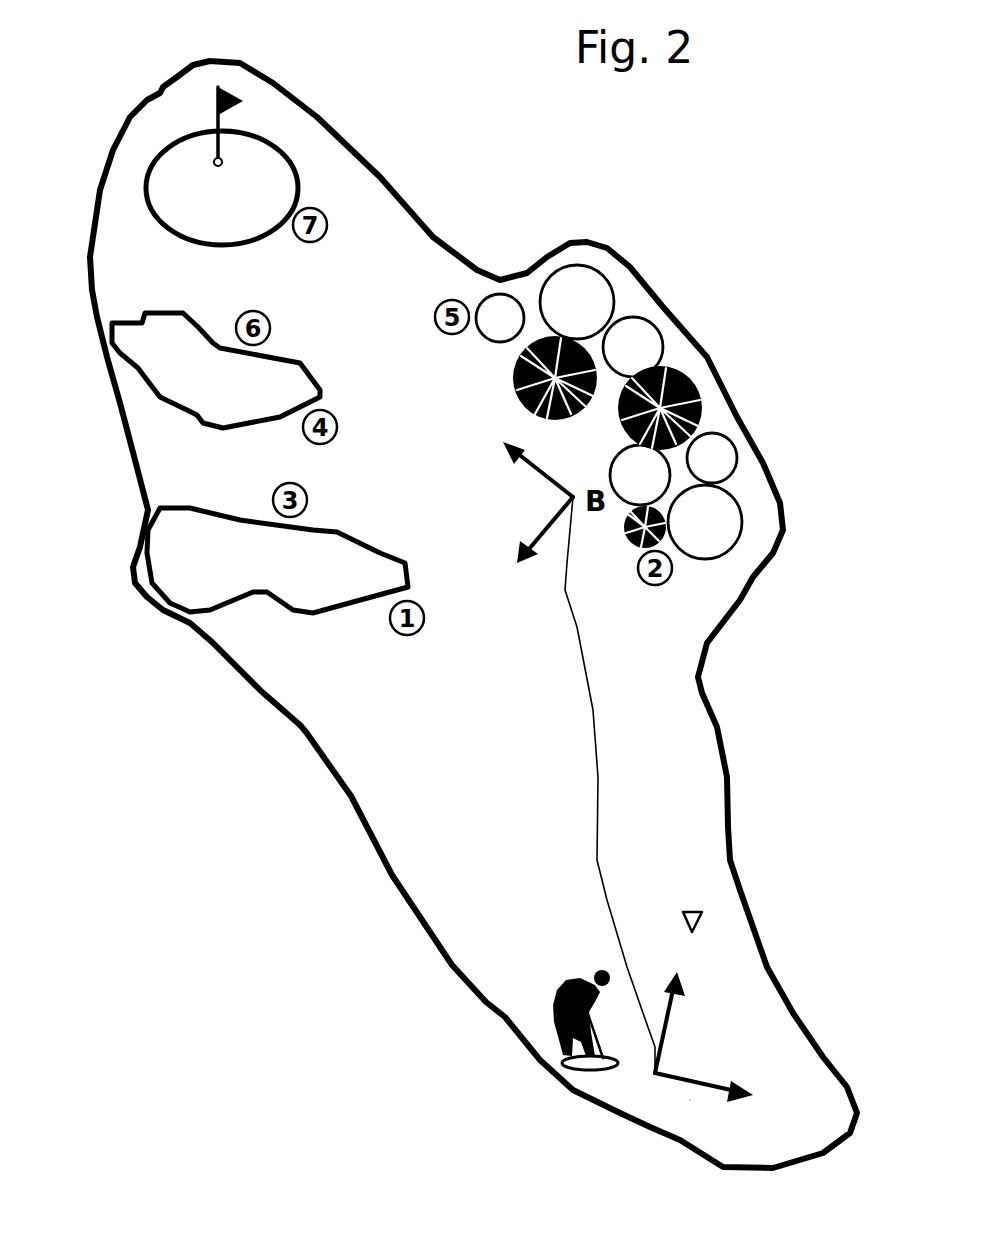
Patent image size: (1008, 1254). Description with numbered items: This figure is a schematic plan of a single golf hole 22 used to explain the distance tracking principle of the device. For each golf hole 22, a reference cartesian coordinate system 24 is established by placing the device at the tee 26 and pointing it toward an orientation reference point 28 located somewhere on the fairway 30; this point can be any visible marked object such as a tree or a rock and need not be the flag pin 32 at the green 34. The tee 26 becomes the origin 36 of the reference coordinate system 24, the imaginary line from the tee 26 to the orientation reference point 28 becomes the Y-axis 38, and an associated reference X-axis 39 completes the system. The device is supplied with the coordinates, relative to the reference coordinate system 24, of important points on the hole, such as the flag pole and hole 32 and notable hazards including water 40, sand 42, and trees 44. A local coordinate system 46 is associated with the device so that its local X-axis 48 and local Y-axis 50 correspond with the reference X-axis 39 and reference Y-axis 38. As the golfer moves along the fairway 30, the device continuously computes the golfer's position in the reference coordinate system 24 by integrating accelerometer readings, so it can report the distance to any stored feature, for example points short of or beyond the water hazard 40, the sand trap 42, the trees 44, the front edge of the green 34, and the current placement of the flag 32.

The golf hole 22 is at (306, 736).
The reference cartesian coordinate system 24 is at (695, 1093).
The tee 26 is at (652, 1087).
The orientation reference point 28 is at (697, 905).
The fairway 30 is at (652, 692).
The flag pin 32 is at (233, 162).
The green 34 is at (267, 185).
The origin 36 is at (673, 1067).
The Y-axis 38 is at (677, 1015).
The reference X-axis 39 is at (717, 1078).
The water hazard 40 is at (187, 580).
The sand trap 42 is at (150, 368).
The trees 44 is at (648, 338).
The local coordinate system 46 is at (567, 475).
The local X-axis 48 is at (530, 475).
The local Y-axis 50 is at (533, 532).